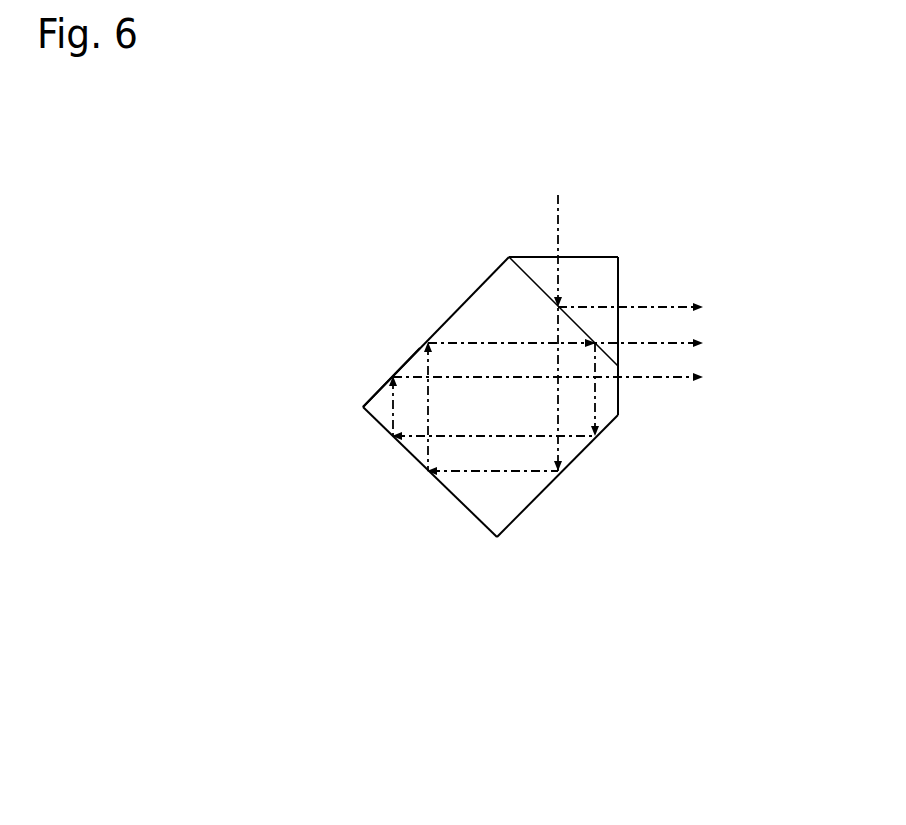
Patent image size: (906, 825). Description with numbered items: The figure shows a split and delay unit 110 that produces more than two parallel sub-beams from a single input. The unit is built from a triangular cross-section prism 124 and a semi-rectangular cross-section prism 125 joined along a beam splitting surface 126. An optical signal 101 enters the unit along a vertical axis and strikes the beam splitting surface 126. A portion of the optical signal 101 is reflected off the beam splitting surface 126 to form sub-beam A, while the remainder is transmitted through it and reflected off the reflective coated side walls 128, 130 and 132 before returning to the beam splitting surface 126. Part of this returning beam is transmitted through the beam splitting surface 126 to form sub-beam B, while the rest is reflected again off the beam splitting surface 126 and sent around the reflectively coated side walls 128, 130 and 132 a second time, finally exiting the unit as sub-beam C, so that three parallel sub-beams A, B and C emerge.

The split and delay unit 110 is at (728, 173).
The optical signal 101 is at (557, 231).
The triangular cross-section prism 124 is at (593, 257).
The beam splitting surface 126 is at (537, 287).
The reflective coated side wall 132 is at (442, 323).
The semi-rectangular cross-section prism 125 is at (402, 367).
The reflective coated side wall 130 is at (467, 508).
The reflective coated side wall 128 is at (543, 493).